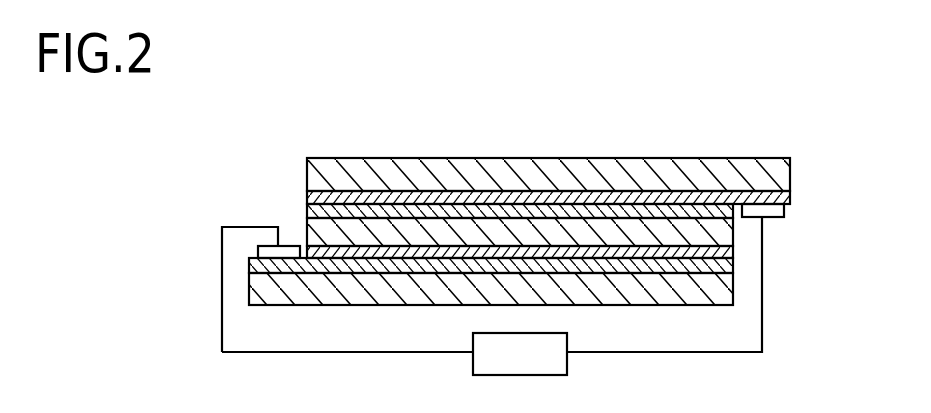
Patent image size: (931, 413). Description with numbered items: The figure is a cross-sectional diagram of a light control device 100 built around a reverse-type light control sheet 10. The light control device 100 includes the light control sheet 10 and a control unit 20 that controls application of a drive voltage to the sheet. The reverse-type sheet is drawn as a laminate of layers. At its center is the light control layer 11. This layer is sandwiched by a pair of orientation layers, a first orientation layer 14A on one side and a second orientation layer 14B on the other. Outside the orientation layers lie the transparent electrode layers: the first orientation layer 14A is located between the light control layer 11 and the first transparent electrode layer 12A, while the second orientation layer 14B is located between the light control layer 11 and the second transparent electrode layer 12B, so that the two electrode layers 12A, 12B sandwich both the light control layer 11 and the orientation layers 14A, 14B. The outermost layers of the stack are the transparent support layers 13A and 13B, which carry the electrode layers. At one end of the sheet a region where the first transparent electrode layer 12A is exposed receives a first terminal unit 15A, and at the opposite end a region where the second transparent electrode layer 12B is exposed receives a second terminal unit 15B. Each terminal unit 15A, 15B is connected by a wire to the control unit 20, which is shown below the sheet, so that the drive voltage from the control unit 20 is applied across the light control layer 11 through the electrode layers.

The light control device 100 is at (276, 127).
The light control sheet 10 is at (727, 142).
The light control layer 11 is at (306, 245).
The first transparent electrode layer 12A is at (792, 198).
The second transparent electrode layer 12B is at (249, 266).
The first transparent support layer 13A is at (792, 173).
The second transparent support layer 13B is at (249, 297).
The first orientation layer 14A is at (738, 219).
The second orientation layer 14B is at (299, 244).
The first terminal unit 15A is at (783, 217).
The second terminal unit 15B is at (250, 250).
The control unit 20 is at (568, 365).